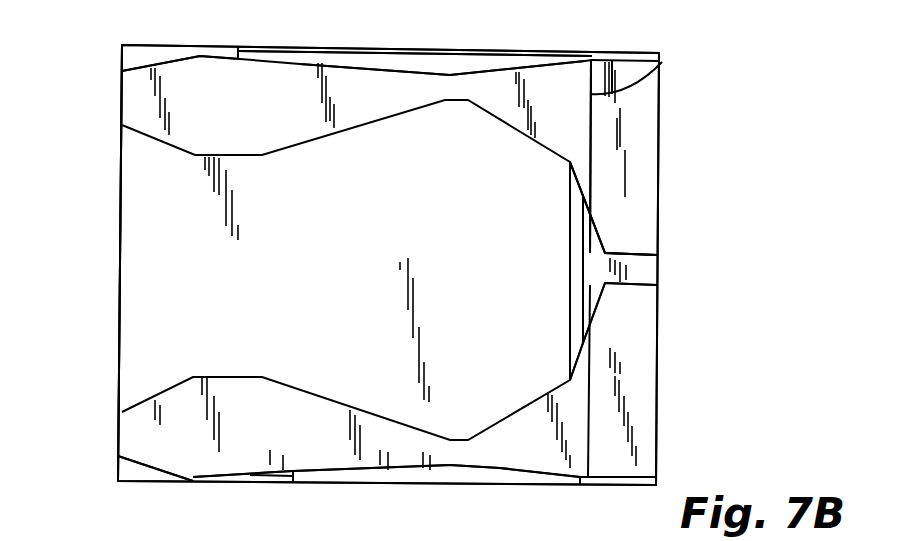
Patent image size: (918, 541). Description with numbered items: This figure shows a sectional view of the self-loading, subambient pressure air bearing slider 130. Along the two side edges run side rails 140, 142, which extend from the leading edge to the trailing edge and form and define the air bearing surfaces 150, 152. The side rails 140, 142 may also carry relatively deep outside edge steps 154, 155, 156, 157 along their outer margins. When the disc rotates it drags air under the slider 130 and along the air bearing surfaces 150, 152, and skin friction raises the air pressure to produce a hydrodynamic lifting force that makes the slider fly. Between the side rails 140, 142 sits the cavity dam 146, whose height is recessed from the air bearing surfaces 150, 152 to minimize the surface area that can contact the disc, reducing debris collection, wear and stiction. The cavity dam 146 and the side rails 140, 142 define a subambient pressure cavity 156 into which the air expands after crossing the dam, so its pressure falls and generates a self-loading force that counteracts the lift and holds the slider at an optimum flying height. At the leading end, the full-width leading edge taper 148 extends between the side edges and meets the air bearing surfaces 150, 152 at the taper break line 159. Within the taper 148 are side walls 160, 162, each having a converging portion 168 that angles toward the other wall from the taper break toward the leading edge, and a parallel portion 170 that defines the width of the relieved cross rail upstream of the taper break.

The slider 130 is at (625, 28).
The side rail 140 is at (295, 475).
The side rail 142 is at (238, 58).
The cavity dam 146 is at (587, 235).
The leading edge taper 148 is at (635, 110).
The air bearing surface 150 is at (200, 457).
The air bearing surface 152 is at (208, 78).
The outside edge step 154 is at (412, 482).
The outside edge step 155 is at (388, 60).
The subambient pressure cavity 156 is at (135, 468).
The outside edge step 157 is at (122, 56).
The taper break line 159 is at (662, 62).
The side wall 160 is at (605, 221).
The side wall 162 is at (609, 307).
The converging portion 168 is at (607, 242).
The parallel portion 170 is at (630, 253).